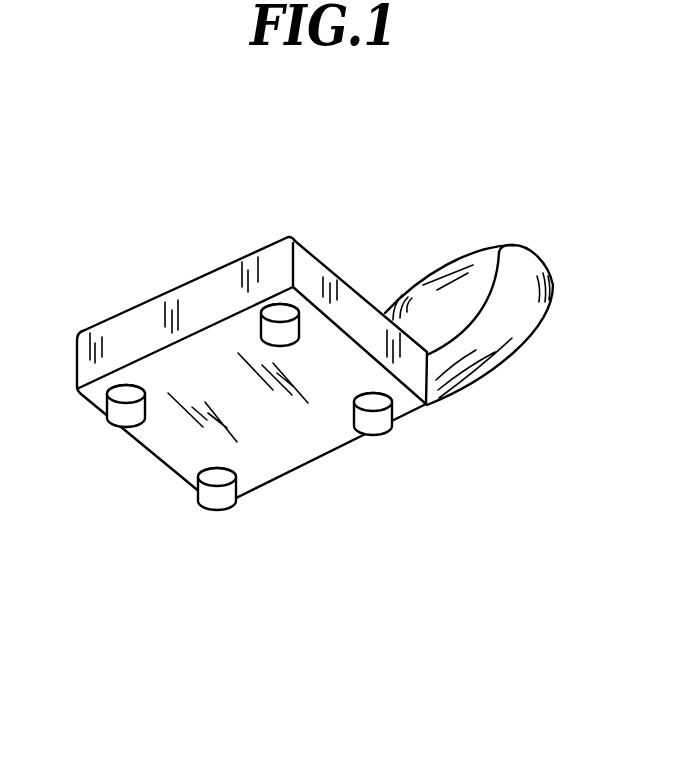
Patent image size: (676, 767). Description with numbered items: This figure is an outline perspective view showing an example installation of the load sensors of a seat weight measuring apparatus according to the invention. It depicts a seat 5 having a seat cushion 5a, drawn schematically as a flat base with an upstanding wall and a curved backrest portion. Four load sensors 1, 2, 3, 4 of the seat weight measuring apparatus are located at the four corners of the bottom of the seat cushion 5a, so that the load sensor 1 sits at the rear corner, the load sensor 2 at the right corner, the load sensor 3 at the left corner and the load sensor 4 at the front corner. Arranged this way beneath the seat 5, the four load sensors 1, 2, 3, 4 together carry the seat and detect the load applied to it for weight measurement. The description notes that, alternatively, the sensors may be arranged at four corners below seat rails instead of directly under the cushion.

The load sensor 1 is at (301, 313).
The load sensor 2 is at (383, 434).
The load sensor 3 is at (124, 428).
The load sensor 4 is at (224, 512).
The seat 5 is at (492, 265).
The seat cushion 5a is at (206, 293).